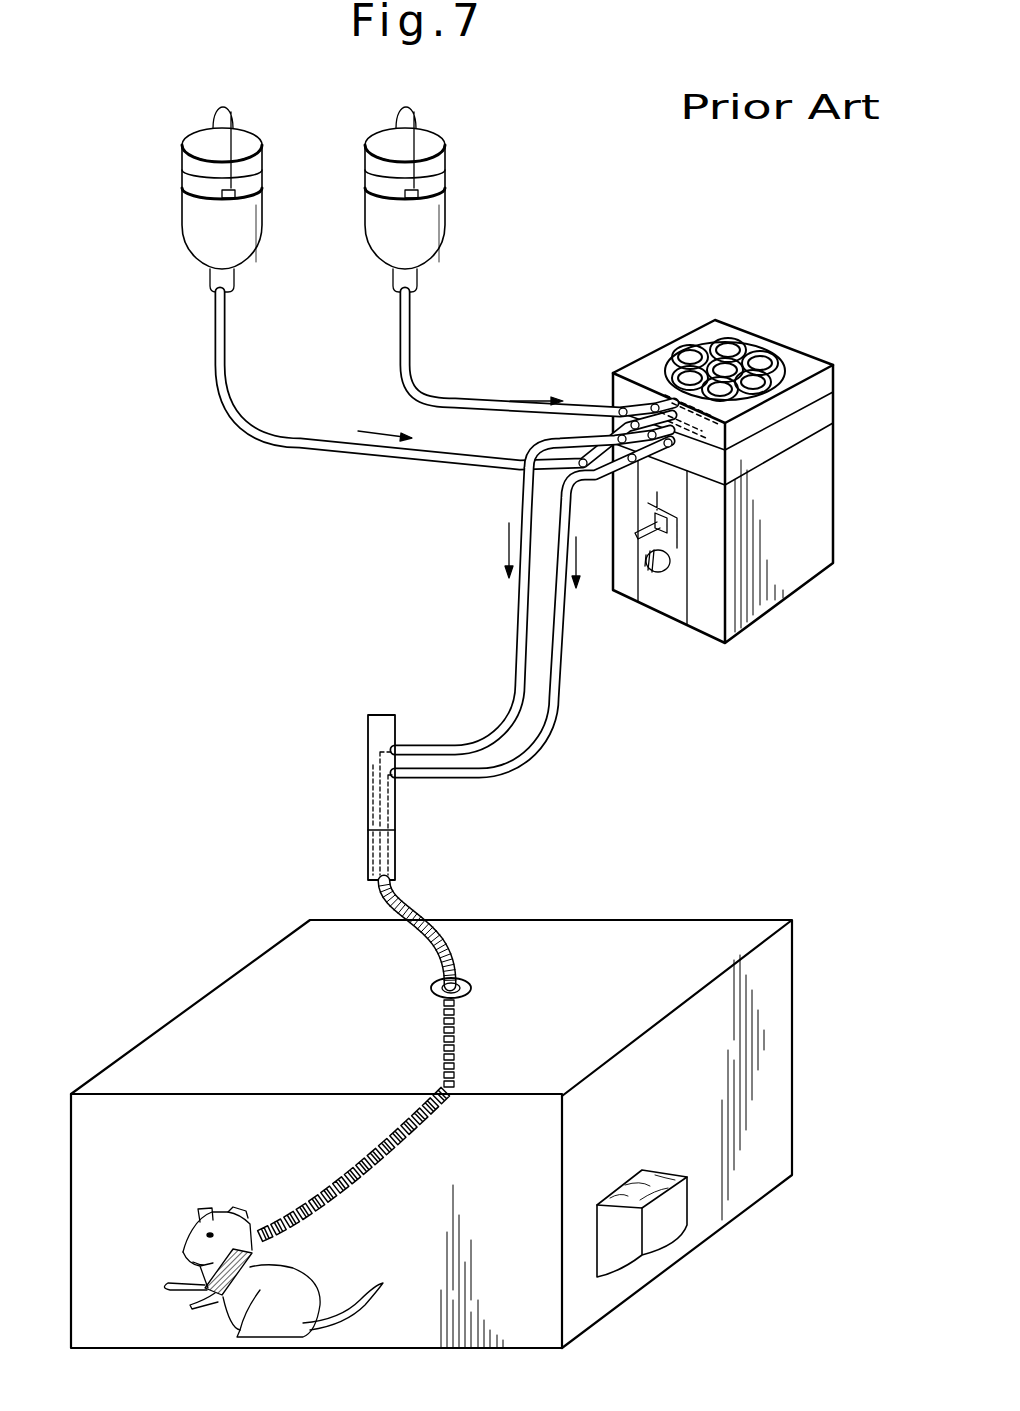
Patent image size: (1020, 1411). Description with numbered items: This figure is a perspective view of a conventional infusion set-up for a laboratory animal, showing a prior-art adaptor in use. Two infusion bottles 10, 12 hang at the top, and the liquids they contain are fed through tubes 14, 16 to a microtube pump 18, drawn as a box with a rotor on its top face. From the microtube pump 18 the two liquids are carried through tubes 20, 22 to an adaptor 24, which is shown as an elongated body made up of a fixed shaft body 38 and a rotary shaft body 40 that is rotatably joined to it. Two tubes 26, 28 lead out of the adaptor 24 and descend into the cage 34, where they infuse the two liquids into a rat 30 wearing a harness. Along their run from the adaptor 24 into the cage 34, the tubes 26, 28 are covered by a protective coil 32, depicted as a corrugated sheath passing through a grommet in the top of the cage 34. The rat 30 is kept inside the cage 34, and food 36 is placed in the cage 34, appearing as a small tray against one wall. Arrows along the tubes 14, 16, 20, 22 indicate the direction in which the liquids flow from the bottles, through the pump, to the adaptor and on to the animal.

The infusion bottle 10 is at (190, 223).
The infusion bottle 12 is at (378, 224).
The tube 14 is at (300, 452).
The tube 16 is at (420, 377).
The microtube pump 18 is at (705, 617).
The tube 20 is at (516, 690).
The tube 22 is at (556, 725).
The adaptor 24 is at (378, 785).
The tube 26 is at (443, 1027).
The tube 28 is at (462, 1065).
The rat 30 is at (290, 1266).
The protective coil 32 is at (417, 908).
The cage 34 is at (165, 1018).
The food 36 is at (650, 1168).
The fixed shaft body 38 is at (398, 797).
The rotary shaft body 40 is at (398, 847).